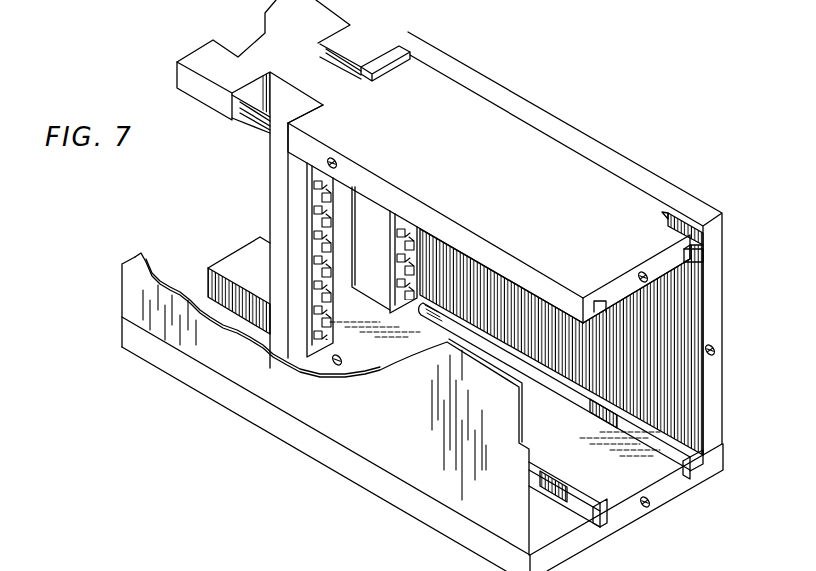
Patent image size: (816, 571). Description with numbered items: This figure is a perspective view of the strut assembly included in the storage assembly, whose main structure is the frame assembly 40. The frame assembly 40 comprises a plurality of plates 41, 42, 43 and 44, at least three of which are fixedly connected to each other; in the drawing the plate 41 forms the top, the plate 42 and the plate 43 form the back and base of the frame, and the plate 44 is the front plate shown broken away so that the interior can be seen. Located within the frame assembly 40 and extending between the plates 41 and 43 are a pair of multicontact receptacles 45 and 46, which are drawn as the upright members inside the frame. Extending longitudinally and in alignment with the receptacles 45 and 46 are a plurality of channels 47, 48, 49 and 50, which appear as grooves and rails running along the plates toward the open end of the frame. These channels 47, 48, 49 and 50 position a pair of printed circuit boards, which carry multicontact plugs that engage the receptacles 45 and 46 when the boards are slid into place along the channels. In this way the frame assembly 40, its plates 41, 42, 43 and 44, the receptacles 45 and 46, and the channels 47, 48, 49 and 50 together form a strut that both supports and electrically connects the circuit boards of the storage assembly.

The frame assembly 40 is at (545, 103).
The plate 41 is at (578, 182).
The plate 42 is at (713, 383).
The plate 43 is at (664, 494).
The plate 44 is at (502, 520).
The multicontact receptacle 45 is at (272, 212).
The multicontact receptacle 46 is at (367, 214).
The channel 47 is at (578, 500).
The channel 48 is at (603, 304).
The channel 49 is at (683, 460).
The channel 50 is at (694, 259).